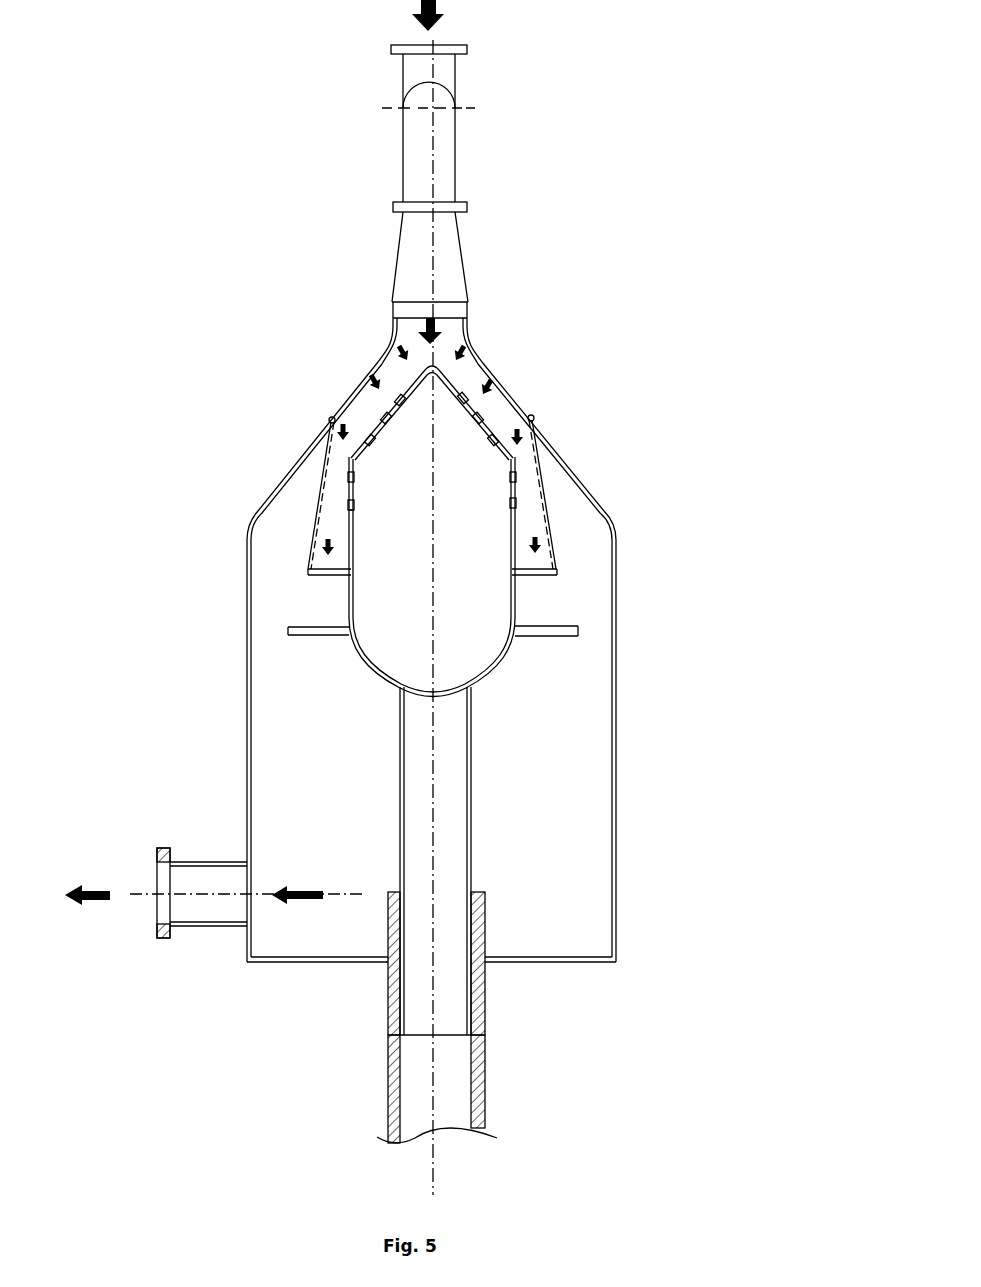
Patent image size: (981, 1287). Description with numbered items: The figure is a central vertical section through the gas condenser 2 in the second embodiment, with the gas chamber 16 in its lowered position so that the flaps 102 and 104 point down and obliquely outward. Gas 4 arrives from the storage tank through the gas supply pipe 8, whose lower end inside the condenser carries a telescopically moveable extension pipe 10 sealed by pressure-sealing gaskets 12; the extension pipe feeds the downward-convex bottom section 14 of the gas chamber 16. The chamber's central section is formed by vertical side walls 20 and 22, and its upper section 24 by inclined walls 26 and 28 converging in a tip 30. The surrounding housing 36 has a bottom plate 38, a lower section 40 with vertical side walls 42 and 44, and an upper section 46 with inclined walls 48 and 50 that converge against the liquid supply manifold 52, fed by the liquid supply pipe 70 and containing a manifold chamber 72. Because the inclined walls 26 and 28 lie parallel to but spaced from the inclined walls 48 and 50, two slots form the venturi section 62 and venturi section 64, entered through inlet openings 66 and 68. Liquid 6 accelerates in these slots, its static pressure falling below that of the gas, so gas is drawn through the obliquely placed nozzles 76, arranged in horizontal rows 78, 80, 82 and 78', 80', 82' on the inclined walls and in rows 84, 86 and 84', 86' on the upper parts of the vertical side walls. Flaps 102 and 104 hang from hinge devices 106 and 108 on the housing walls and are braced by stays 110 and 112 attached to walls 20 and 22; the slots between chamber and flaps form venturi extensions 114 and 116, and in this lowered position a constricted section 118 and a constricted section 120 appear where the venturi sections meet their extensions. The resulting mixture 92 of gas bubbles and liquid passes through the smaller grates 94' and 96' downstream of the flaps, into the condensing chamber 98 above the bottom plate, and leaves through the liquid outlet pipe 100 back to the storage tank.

The gas condenser 2 is at (407, 597).
The gas 4 is at (462, 565).
The liquid 6 is at (368, 427).
The gas supply pipe 8 is at (484, 1050).
The extension pipe 10 is at (472, 735).
The gaskets 12 is at (475, 905).
The bottom section 14 is at (429, 551).
The gas chamber 16 is at (373, 680).
The vertical side wall 20 is at (353, 589).
The vertical side wall 22 is at (511, 589).
The upper section 24 is at (468, 333).
The inclined wall 26 is at (400, 380).
The inclined wall 28 is at (462, 378).
The tip 30 is at (396, 329).
The housing 36 is at (437, 642).
The bottom plate 38 is at (555, 963).
The lower section 40 is at (244, 767).
The vertical side wall 42 is at (246, 710).
The vertical side wall 44 is at (622, 702).
The upper section 46 is at (448, 451).
The inclined wall 48 is at (278, 486).
The inclined wall 50 is at (592, 487).
The liquid supply manifold 52 is at (470, 150).
The venturi section 62 is at (370, 397).
The venturi section 64 is at (493, 400).
The inlet opening 66 is at (394, 340).
The inlet opening 68 is at (470, 350).
The liquid supply pipe 70 is at (446, 72).
The manifold chamber 72 is at (448, 245).
The nozzles 76 is at (355, 513).
The row of nozzles 78 is at (412, 414).
The row of nozzles 80 is at (404, 433).
The row of nozzles 82 is at (390, 454).
The row of nozzles 84 is at (380, 484).
The row of nozzles 86 is at (381, 509).
The row of nozzles 78' is at (453, 412).
The row of nozzles 80' is at (461, 433).
The row of nozzles 82' is at (470, 455).
The row of nozzles 84' is at (479, 484).
The row of nozzles 86' is at (482, 510).
The mixture 92 is at (333, 617).
The grate 94' is at (318, 659).
The grate 96' is at (545, 656).
The condensing chamber 98 is at (578, 777).
The liquid outlet pipe 100 is at (198, 928).
The flap 102 is at (320, 482).
The flap 104 is at (540, 478).
The hinge device 106 is at (328, 418).
The hinge device 108 is at (533, 418).
The stay 110 is at (327, 576).
The stay 112 is at (540, 576).
The venturi extension 114 is at (332, 515).
The venturi extension 116 is at (525, 505).
The constricted section 118 is at (340, 450).
The constricted section 120 is at (522, 448).